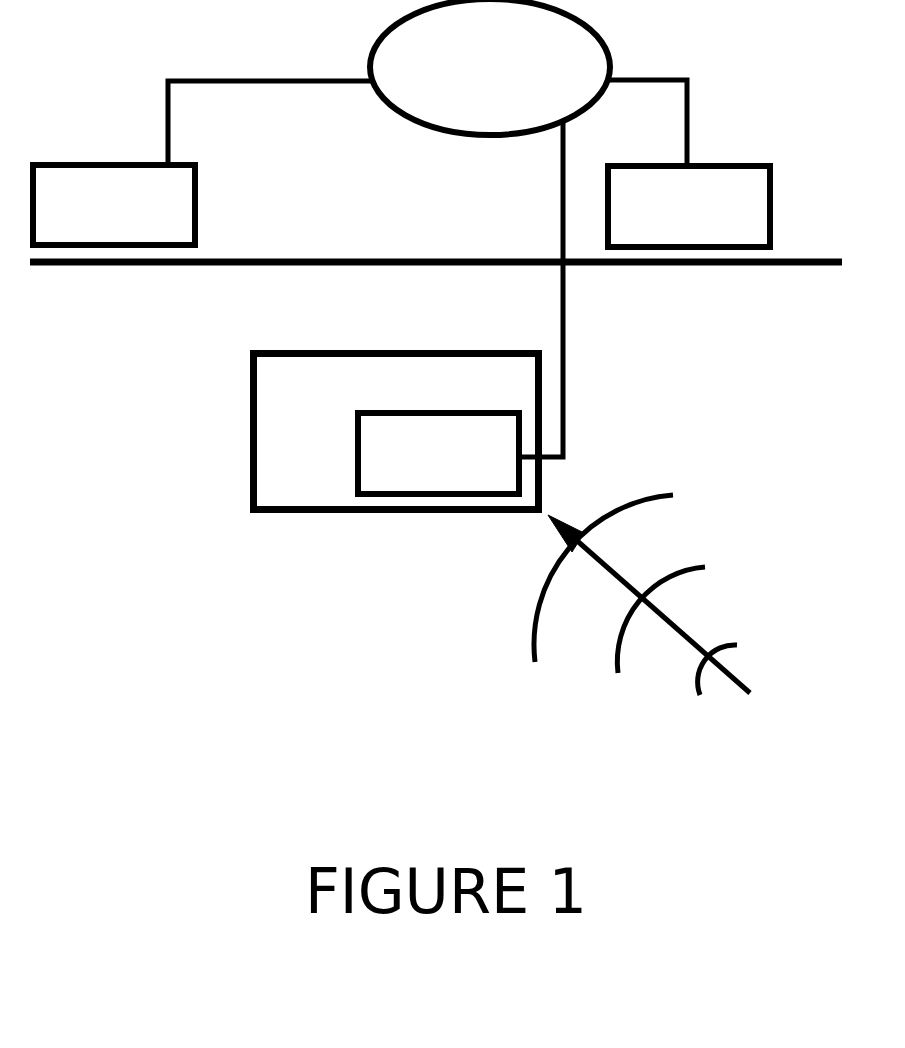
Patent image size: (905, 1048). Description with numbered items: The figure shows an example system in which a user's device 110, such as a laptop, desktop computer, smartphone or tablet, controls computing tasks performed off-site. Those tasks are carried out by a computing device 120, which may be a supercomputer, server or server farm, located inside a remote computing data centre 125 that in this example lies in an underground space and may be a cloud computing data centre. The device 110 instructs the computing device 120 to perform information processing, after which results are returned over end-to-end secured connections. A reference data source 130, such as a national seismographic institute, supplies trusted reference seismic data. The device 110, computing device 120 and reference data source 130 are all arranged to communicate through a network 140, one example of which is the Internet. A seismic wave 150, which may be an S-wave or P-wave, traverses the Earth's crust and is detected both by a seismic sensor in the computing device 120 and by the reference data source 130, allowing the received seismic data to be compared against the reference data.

The device 110 is at (693, 223).
The computing device 120 is at (446, 476).
The remote computing data centre 125 is at (283, 400).
The reference data source 130 is at (116, 222).
The network 140 is at (468, 85).
The seismic wave 150 is at (673, 632).